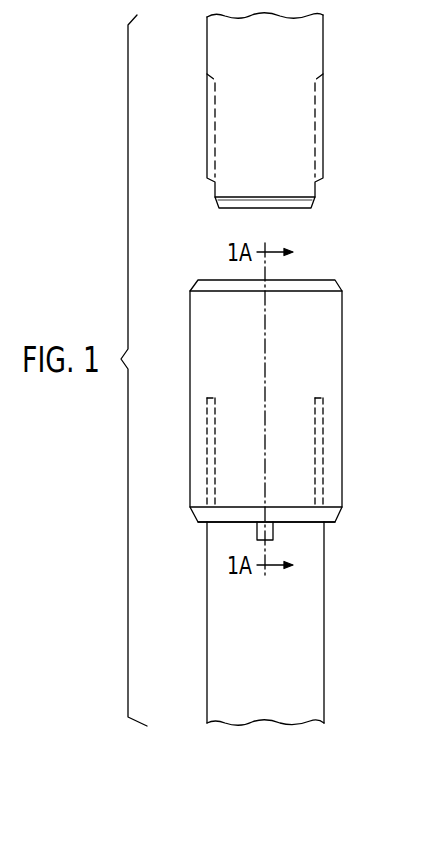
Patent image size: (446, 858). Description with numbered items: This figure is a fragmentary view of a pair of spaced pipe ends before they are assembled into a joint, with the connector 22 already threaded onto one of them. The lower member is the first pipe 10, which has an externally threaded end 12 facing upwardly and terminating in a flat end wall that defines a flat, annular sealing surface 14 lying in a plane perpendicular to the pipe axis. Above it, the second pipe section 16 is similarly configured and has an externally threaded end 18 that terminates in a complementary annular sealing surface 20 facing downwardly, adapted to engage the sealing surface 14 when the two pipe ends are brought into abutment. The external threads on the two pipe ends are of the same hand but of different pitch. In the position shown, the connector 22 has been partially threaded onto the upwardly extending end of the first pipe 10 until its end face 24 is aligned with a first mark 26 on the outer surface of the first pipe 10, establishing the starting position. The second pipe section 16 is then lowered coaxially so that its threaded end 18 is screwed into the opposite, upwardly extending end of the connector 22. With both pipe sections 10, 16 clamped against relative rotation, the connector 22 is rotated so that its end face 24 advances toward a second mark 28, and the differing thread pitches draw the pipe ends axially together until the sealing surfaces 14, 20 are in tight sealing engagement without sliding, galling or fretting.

The first pipe 10 is at (308, 657).
The externally threaded end 12 is at (318, 460).
The annular sealing surface 14 is at (318, 398).
The second pipe section 16 is at (308, 54).
The externally threaded end 18 is at (317, 138).
The annular sealing surface 20 is at (308, 208).
The connector 22 is at (311, 340).
The end face 24 is at (303, 522).
The first mark 26 is at (258, 524).
The second mark 28 is at (265, 541).